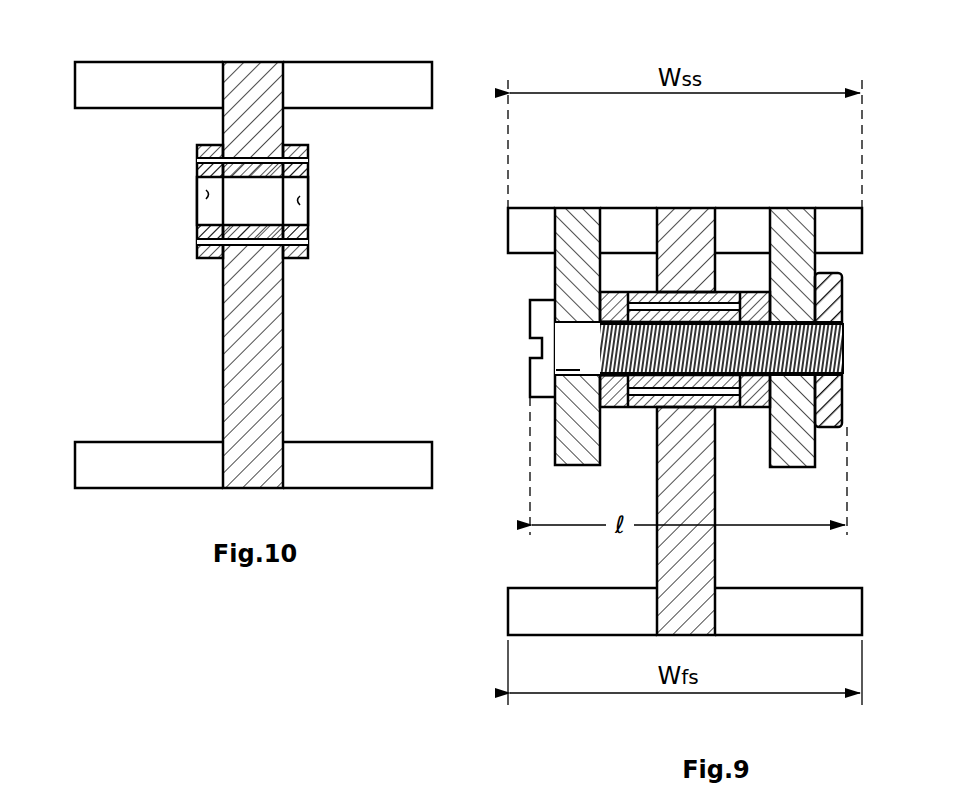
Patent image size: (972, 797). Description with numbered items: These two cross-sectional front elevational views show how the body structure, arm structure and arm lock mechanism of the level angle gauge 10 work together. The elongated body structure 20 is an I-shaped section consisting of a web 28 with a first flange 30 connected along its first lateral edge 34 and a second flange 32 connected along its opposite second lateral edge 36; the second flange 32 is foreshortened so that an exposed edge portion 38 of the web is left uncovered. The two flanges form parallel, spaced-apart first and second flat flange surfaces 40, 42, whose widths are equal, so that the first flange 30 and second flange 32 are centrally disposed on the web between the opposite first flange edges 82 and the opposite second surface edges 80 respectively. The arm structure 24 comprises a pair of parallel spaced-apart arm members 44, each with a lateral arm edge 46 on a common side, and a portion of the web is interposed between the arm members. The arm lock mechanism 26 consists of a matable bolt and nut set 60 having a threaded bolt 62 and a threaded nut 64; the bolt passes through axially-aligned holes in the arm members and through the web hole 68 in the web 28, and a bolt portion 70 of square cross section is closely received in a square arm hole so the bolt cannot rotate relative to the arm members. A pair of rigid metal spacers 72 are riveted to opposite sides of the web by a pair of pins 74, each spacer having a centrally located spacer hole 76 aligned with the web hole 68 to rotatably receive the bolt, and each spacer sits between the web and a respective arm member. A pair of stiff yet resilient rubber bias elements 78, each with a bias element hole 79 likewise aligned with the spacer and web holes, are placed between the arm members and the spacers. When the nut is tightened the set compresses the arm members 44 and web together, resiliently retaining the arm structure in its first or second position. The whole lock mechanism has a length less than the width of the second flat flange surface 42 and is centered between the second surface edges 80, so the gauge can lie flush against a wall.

In FIG. 10, the level angle gauge 10 is at (447, 78).
In FIG. 9, the level angle gauge 10 is at (567, 175).
In FIG. 10, the elongated body structure 20 is at (286, 347).
In FIG. 9, the elongated body structure 20 is at (722, 560).
In FIG. 9, the arm structure 24 is at (578, 205).
In FIG. 9, the arm lock mechanism 26 is at (850, 348).
In FIG. 10, the web 28 is at (283, 412).
In FIG. 9, the web 28 is at (716, 540).
In FIG. 9, the first flange 30 is at (508, 590).
In FIG. 9, the second flange 32 is at (838, 207).
In FIG. 10, the first lateral edge 34 is at (223, 442).
In FIG. 9, the first lateral edge 34 is at (718, 588).
In FIG. 10, the second lateral edge 36 is at (265, 118).
In FIG. 9, the second lateral edge 36 is at (636, 257).
In FIG. 10, the exposed edge portion 38 is at (255, 62).
In FIG. 9, the exposed edge portion 38 is at (677, 207).
In FIG. 9, the first flat flange surface 40 is at (590, 635).
In FIG. 9, the second flat flange surface 42 is at (615, 207).
In FIG. 9, the arm members 44 is at (555, 272).
In FIG. 9, the lateral arm edge 46 is at (540, 207).
In FIG. 9, the matable bolt and nut set 60 is at (530, 393).
In FIG. 9, the threaded bolt 62 is at (530, 332).
In FIG. 9, the threaded nut 64 is at (842, 400).
In FIG. 10, the web hole 68 is at (236, 213).
In FIG. 9, the bolt portion 70 is at (572, 350).
In FIG. 10, the spacers 72 is at (202, 258).
In FIG. 9, the spacers 72 is at (643, 407).
In FIG. 10, the pins 74 is at (307, 160).
In FIG. 9, the pins 74 is at (730, 292).
In FIG. 10, the spacer hole 76 is at (205, 192).
In FIG. 9, the bias elements 78 is at (618, 407).
In FIG. 9, the bias element hole 79 is at (555, 266).
In FIG. 9, the second surface edges 80 is at (508, 230).
In FIG. 9, the first flange edges 82 is at (508, 612).